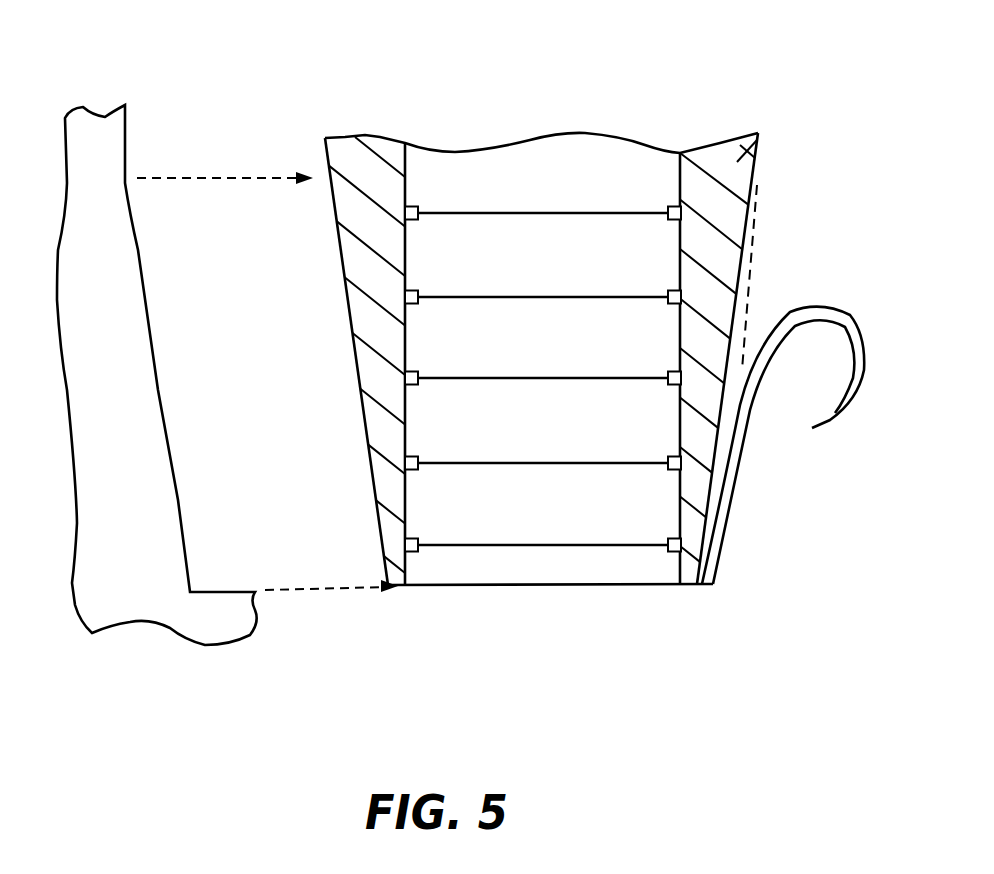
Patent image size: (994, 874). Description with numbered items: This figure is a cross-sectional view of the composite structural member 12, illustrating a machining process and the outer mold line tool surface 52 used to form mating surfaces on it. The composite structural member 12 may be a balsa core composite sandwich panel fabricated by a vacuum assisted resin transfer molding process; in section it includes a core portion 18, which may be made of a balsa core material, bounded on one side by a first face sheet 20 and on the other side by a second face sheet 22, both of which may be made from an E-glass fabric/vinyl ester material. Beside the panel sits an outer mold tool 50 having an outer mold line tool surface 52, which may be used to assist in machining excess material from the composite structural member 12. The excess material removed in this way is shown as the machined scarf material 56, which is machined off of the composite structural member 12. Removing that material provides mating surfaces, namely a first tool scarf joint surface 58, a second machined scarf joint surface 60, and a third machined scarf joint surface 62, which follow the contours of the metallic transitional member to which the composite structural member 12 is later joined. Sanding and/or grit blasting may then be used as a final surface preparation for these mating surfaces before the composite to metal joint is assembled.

The composite structural member 12 is at (557, 110).
The core portion 18 is at (530, 259).
The first face sheet 20 is at (368, 134).
The second face sheet 22 is at (760, 151).
The outer mold tool 50 is at (72, 583).
The outer mold line tool surface 52 is at (140, 250).
The machined scarf material 56 is at (858, 399).
The first tool scarf joint surface 58 is at (350, 328).
The second machined scarf joint surface 60 is at (740, 303).
The third machined scarf joint surface 62 is at (637, 586).